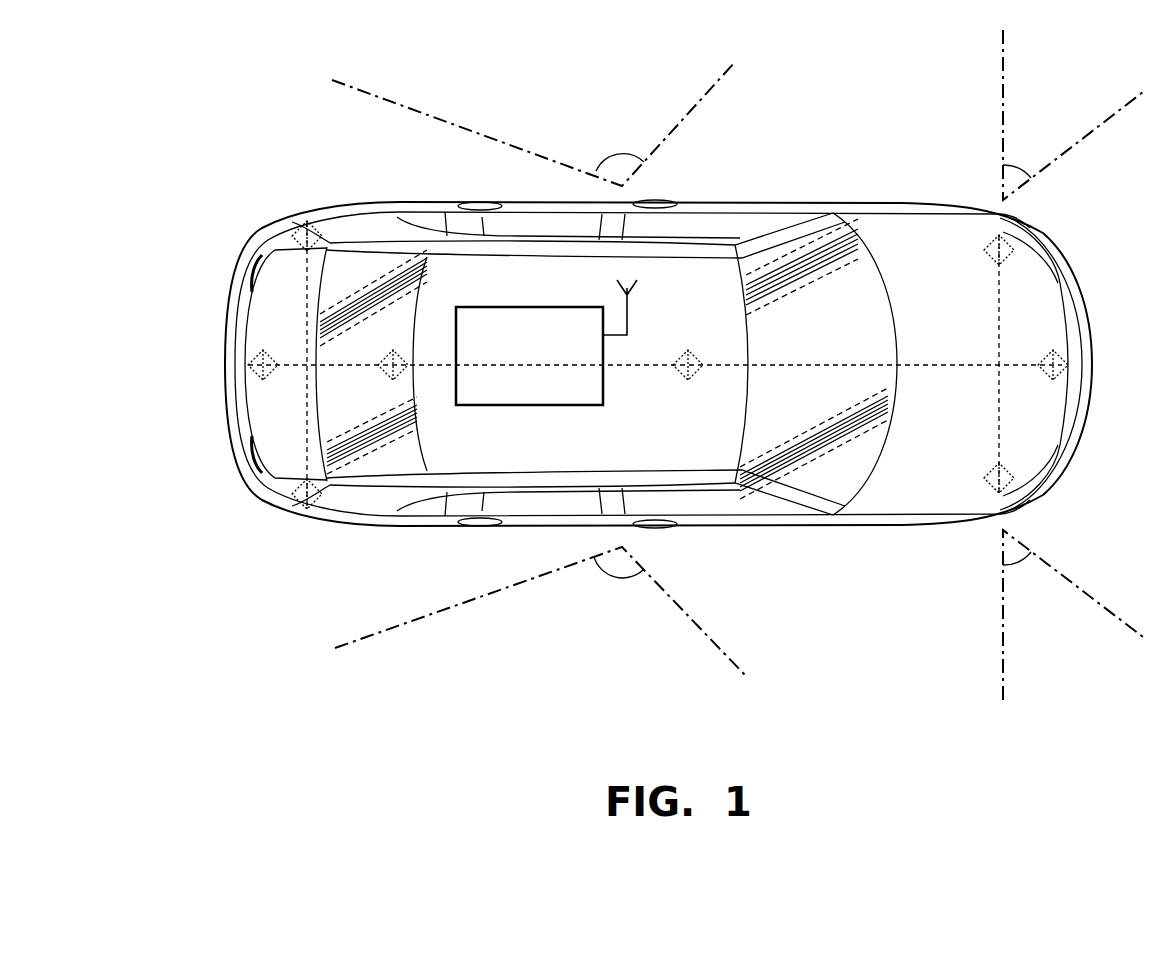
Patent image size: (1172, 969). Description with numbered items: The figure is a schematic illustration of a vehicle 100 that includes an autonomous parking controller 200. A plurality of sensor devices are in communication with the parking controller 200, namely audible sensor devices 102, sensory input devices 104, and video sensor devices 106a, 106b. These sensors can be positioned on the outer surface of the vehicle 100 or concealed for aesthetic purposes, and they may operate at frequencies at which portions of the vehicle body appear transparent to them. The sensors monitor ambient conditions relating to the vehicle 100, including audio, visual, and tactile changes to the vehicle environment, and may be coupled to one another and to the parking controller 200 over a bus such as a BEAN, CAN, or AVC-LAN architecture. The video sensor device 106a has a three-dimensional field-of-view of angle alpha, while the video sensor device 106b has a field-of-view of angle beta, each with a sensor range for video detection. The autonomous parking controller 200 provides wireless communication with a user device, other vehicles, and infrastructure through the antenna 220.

The vehicle 100 is at (903, 205).
The audible sensor devices 102 is at (393, 382).
The sensory input devices 104 is at (270, 228).
The video sensor device 106a is at (538, 365).
The video sensor device 106b is at (1073, 365).
The autonomous parking controller 200 is at (540, 406).
The antenna 220 is at (630, 318).